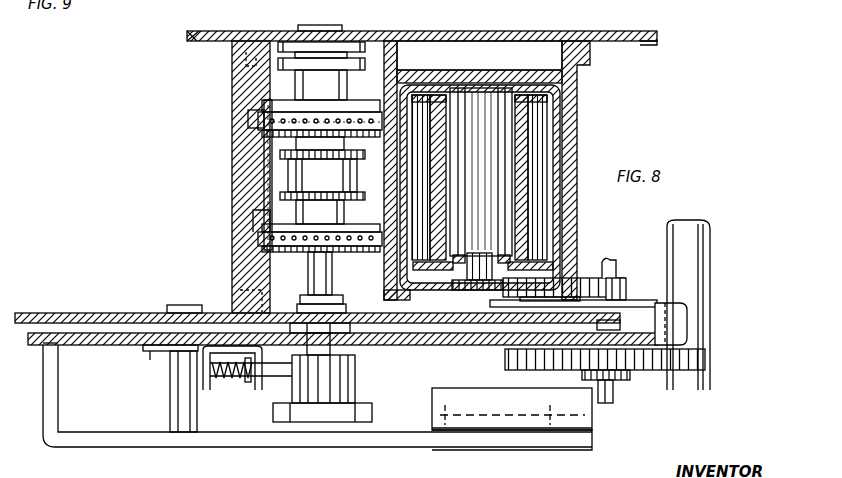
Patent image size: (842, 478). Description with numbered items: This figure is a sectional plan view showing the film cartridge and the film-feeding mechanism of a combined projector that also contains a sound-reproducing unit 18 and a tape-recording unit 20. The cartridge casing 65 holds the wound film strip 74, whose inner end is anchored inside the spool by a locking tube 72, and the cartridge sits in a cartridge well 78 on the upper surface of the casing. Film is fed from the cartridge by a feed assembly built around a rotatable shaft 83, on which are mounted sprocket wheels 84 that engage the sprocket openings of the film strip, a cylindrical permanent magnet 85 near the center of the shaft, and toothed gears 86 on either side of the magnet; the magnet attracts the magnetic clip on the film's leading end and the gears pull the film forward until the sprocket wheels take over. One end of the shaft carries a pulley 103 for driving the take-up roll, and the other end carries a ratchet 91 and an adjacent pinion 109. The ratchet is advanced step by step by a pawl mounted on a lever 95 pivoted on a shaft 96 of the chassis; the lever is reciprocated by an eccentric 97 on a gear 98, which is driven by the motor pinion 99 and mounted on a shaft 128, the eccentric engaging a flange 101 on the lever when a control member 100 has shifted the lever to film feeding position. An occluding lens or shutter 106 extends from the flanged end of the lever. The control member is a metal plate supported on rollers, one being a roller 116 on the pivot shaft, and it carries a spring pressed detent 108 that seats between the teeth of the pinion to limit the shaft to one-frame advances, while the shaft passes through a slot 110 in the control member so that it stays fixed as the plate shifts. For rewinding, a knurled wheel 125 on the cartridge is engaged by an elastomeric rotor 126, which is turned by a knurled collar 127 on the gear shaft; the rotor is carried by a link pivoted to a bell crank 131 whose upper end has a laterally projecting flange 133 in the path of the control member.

The sound-reproducing unit 18 is at (693, 22).
The tape-recording unit 20 is at (414, 20).
The casing 65 is at (577, 117).
The locking tube 72 is at (473, 100).
The film strip 74 is at (264, 163).
The cartridge well 78 is at (577, 72).
The rotatable shaft 83 is at (322, 273).
The sprocket wheels 84 is at (258, 121).
The cylindrical permanent magnet 85 is at (298, 183).
The toothed gears 86 is at (262, 213).
The ratchet 91 is at (372, 412).
The lever 95 is at (345, 450).
The shaft 96 is at (170, 386).
The eccentric 97 is at (613, 397).
The gear 98 is at (668, 362).
The pinion 99 is at (710, 301).
The control member 100 is at (460, 338).
The flange 101 is at (495, 397).
The pulley 103 is at (348, 66).
The occluding lens or shutter 106 is at (555, 448).
The spring pressed detent 108 is at (271, 380).
The pinion 109 is at (349, 376).
The slot 110 is at (350, 318).
The roller 116 is at (148, 351).
The knurled wheel 125 is at (450, 290).
The rotor 126 is at (583, 279).
The knurled collar 127 is at (615, 281).
The shaft 128 is at (606, 260).
The bell crank 131 is at (640, 300).
The flange 133 is at (680, 326).